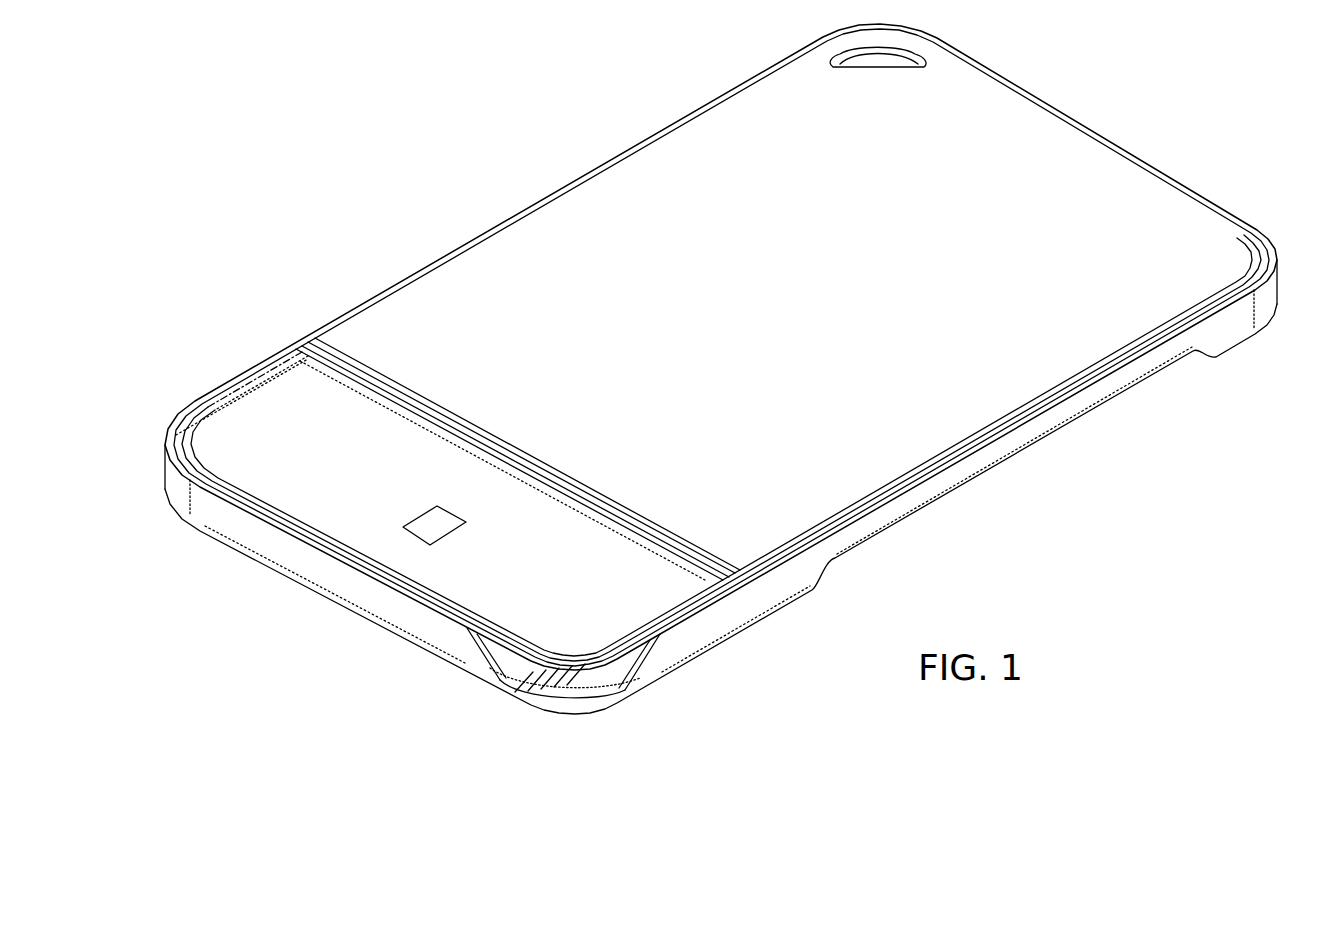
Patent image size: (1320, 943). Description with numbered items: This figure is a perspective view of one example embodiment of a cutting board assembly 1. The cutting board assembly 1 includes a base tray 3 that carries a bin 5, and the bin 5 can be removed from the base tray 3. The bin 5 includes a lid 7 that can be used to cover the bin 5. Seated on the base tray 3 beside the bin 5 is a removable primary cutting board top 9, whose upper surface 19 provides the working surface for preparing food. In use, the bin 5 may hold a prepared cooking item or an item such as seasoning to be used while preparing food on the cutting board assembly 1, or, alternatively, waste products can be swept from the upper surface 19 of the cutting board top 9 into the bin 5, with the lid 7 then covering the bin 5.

The cutting board assembly 1 is at (371, 121).
The base tray 3 is at (1276, 292).
The bin 5 is at (600, 682).
The lid 7 is at (270, 414).
The primary cutting board top 9 is at (736, 146).
The upper surface 19 is at (536, 252).